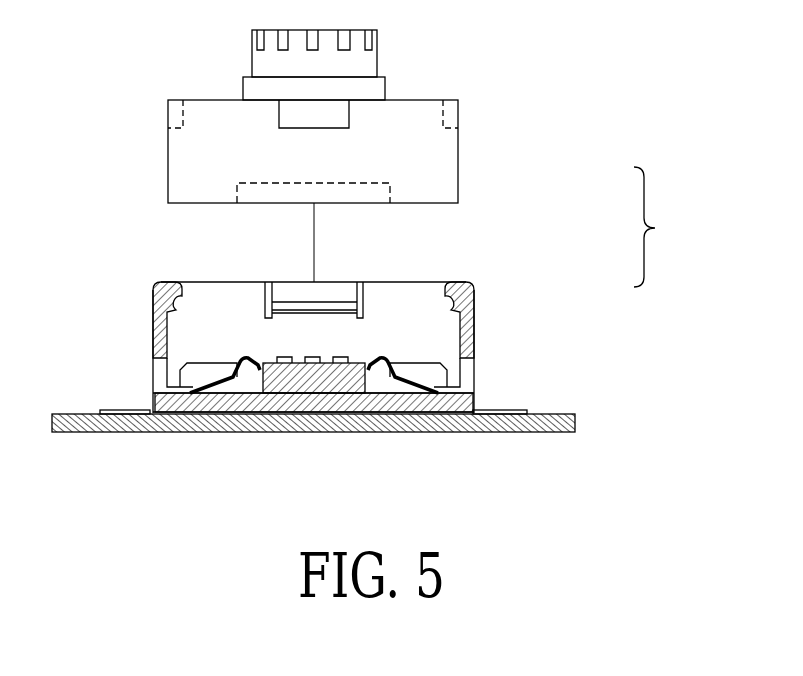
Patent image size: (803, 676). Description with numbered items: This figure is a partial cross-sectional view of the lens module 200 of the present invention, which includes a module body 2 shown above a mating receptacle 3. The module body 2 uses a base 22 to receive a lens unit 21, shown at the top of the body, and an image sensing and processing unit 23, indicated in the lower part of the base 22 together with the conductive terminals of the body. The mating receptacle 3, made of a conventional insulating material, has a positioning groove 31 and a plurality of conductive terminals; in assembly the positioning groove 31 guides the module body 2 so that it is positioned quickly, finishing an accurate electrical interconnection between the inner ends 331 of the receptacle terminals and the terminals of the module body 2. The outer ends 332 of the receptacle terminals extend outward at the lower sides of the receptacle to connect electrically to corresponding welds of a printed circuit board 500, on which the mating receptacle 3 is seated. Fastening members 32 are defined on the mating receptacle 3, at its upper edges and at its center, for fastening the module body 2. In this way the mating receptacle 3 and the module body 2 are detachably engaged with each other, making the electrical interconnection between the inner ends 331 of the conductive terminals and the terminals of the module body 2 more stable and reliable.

The lens module 200 is at (672, 227).
The module body 2 is at (357, 146).
The lens unit 21 is at (257, 57).
The base 22 is at (183, 155).
The image sensing and processing unit 23 is at (357, 183).
The mating receptacle 3 is at (345, 318).
The positioning groove 31 is at (232, 328).
The fastening members 32 is at (175, 300).
The inner ends of the terminals 331 is at (380, 357).
The outer ends of the terminals 332 is at (122, 415).
The printed circuit board 500 is at (578, 423).